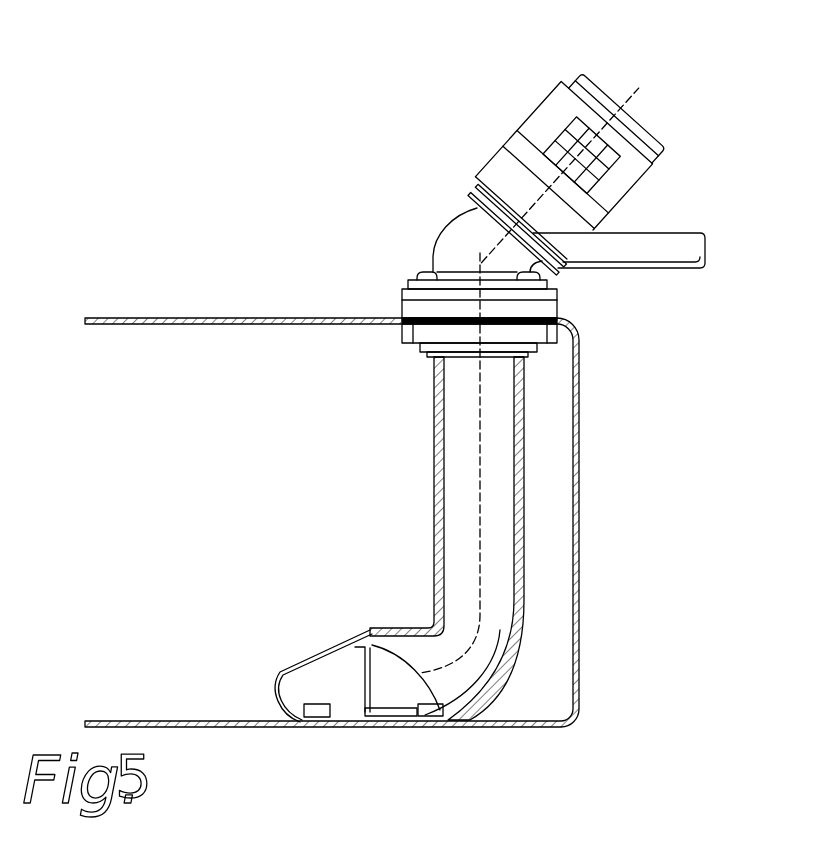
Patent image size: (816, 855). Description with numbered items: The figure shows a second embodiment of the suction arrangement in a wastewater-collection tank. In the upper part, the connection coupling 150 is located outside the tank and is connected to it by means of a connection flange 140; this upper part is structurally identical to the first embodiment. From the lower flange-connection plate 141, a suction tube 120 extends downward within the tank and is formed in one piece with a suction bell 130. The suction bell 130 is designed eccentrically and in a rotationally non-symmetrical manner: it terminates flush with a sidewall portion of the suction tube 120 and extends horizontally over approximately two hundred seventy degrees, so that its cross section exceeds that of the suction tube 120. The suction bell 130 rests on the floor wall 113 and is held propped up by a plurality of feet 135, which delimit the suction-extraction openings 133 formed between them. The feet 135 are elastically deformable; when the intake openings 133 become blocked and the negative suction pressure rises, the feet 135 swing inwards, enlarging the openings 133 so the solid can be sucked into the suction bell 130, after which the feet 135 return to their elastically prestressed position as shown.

The floor wall 113 is at (520, 728).
The suction tube 120 is at (510, 477).
The suction bell 130 is at (538, 683).
The suction-extraction openings 133 is at (370, 629).
The feet 135 is at (468, 722).
The connection flange 140 is at (380, 282).
The lower flange-connection plate 141 is at (532, 335).
The connection coupling 150 is at (503, 108).